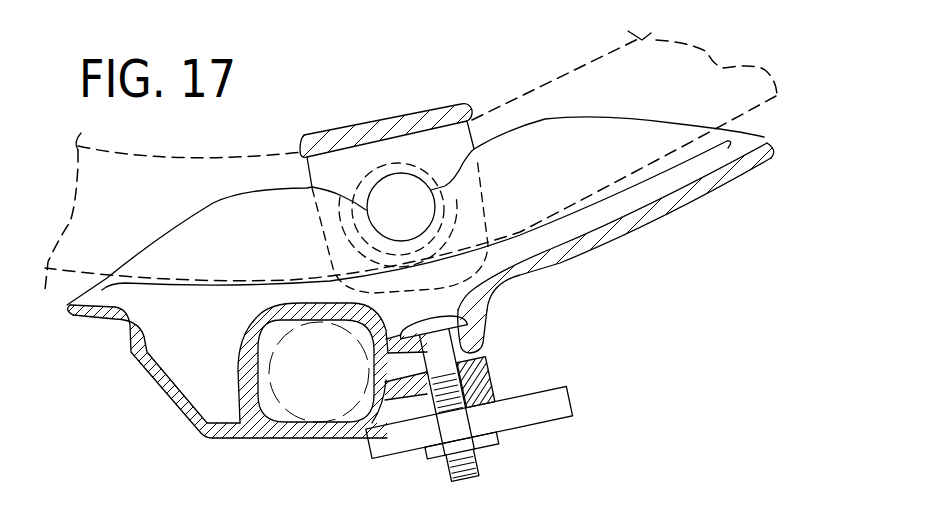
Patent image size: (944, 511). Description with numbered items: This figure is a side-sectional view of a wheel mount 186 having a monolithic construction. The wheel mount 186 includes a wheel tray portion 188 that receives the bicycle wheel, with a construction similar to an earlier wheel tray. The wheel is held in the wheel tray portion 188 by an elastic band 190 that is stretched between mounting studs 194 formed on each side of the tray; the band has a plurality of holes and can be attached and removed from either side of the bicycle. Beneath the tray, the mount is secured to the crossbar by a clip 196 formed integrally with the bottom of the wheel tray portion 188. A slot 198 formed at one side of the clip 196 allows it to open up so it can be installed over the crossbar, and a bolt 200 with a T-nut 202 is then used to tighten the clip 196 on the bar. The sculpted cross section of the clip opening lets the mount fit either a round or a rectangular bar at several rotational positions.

The wheel mount 186 is at (610, 314).
The wheel tray portion 188 is at (660, 214).
The elastic band 190 is at (403, 118).
The mounting studs 194 is at (482, 170).
The clip 196 is at (308, 438).
The slot 198 is at (490, 357).
The bolt 200 is at (487, 294).
The T-nut 202 is at (528, 394).